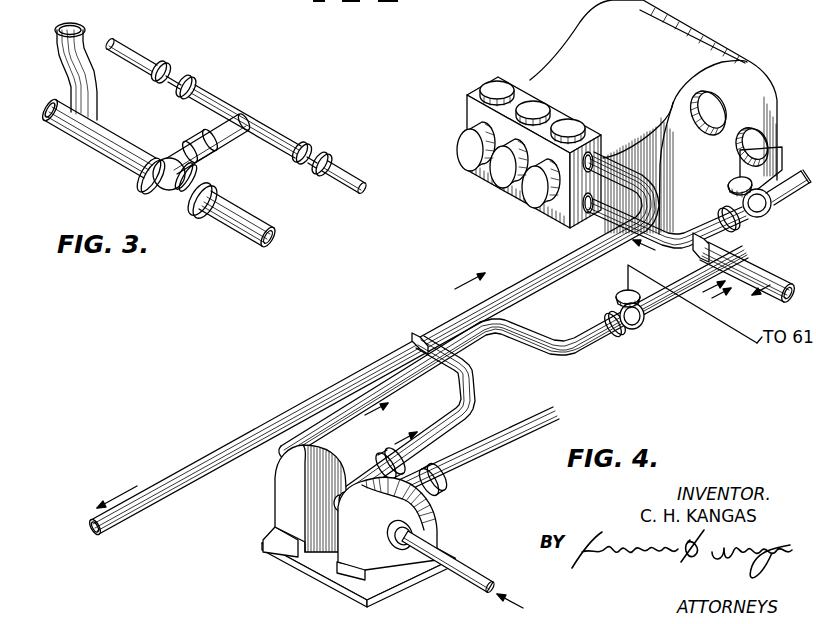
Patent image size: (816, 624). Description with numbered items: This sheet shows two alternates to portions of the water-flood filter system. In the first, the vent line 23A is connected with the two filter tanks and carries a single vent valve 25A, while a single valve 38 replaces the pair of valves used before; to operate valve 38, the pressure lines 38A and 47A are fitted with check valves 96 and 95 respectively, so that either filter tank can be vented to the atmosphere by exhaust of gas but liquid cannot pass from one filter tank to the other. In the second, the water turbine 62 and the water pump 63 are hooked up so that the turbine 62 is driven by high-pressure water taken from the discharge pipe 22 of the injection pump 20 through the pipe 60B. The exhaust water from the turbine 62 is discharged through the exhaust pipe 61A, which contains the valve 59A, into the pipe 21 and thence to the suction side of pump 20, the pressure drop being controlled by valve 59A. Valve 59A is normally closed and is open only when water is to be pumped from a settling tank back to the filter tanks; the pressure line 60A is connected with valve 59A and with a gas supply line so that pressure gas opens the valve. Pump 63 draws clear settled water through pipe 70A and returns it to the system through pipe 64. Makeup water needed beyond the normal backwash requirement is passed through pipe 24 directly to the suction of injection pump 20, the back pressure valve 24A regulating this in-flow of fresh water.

In FIG. 4, the pump 20 is at (503, 175).
In FIG. 4, the pipe 21 is at (757, 271).
In FIG. 4, the pipe 22 is at (535, 262).
In FIG. 3, the vent line 23A is at (96, 143).
In FIG. 4, the pipe 24 is at (798, 208).
In FIG. 4, the back pressure valve 24A is at (745, 214).
In FIG. 3, the vent valve 25A is at (63, 66).
In FIG. 3, the valve 38 is at (180, 196).
In FIG. 3, the pressure line 38A is at (340, 171).
In FIG. 3, the pressure line 47A is at (134, 53).
In FIG. 4, the valve 59A is at (630, 328).
In FIG. 4, the pressure line 60A is at (736, 326).
In FIG. 4, the pipe 60B is at (477, 386).
In FIG. 4, the exhaust pipe 61A is at (527, 340).
In FIG. 4, the water turbine 62 is at (280, 513).
In FIG. 4, the pump 63 is at (432, 525).
In FIG. 4, the pipe 64 is at (547, 424).
In FIG. 4, the pipe 70A is at (460, 571).
In FIG. 3, the check valve 95 is at (186, 76).
In FIG. 3, the check valve 96 is at (312, 155).